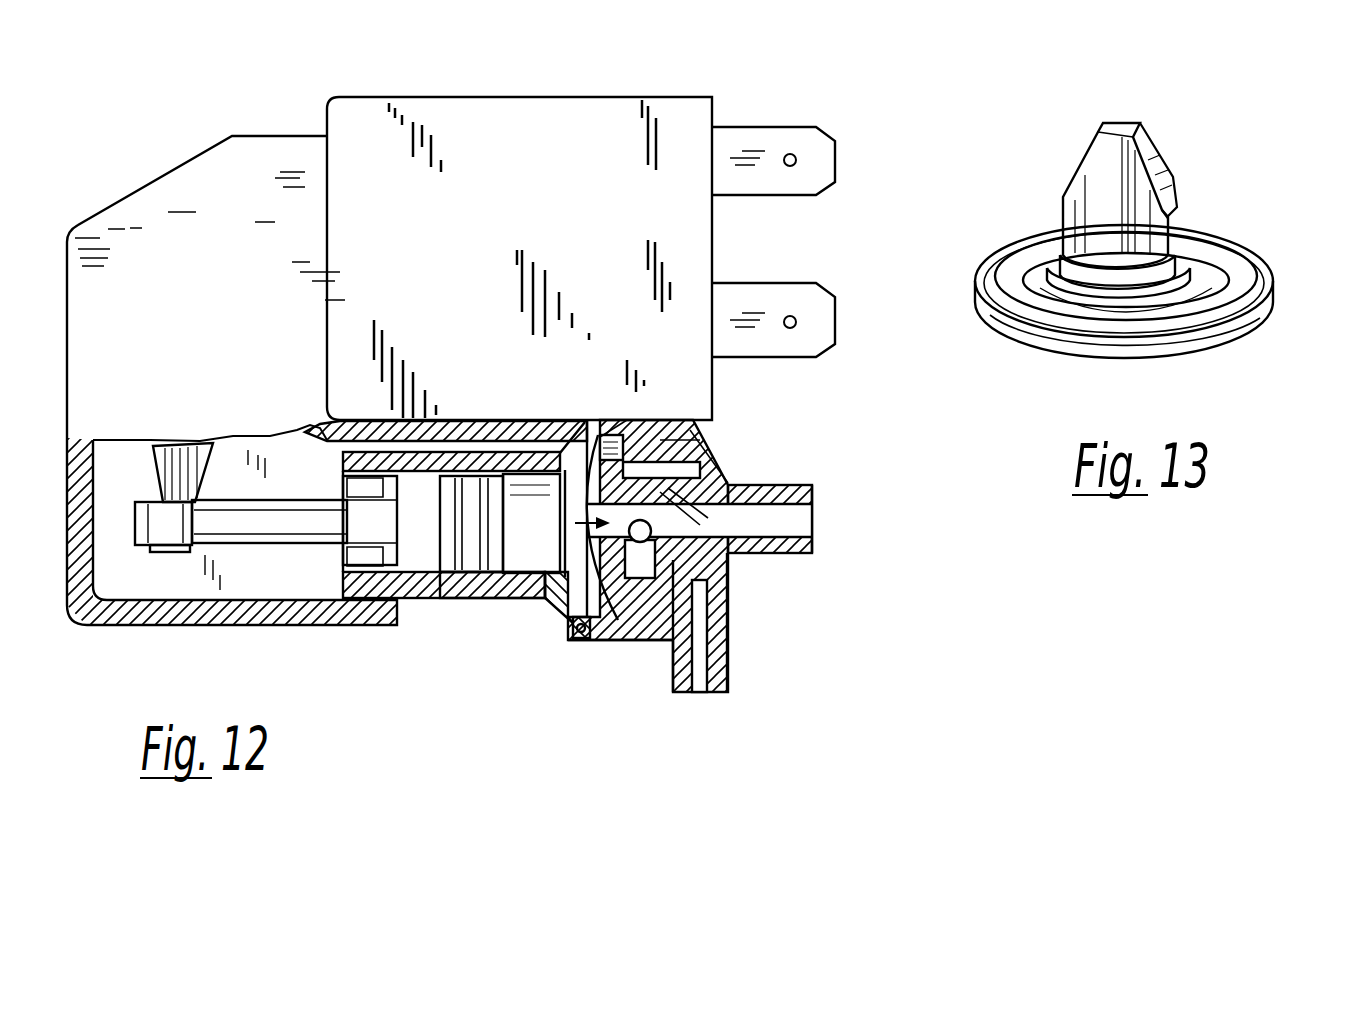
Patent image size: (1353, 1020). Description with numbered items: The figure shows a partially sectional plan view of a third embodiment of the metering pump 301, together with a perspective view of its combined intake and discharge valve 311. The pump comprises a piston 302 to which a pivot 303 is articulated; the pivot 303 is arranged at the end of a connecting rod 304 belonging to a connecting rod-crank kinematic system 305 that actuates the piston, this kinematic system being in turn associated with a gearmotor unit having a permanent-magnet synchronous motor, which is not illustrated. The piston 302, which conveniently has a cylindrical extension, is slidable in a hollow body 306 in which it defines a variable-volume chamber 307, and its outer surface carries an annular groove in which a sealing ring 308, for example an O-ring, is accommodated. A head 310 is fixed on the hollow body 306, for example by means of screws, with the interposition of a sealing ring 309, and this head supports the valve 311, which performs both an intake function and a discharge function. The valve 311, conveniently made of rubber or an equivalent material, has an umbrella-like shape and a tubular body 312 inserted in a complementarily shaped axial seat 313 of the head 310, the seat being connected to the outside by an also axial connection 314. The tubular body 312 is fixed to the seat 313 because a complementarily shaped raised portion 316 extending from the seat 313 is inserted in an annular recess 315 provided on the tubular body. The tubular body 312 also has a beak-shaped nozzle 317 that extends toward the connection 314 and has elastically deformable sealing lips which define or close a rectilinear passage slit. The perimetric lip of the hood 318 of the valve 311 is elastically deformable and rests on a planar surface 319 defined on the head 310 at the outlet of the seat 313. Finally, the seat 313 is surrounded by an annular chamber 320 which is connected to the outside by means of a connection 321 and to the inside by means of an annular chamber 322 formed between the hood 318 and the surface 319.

In FIG. 12, the metering pump 301 is at (650, 68).
In FIG. 12, the piston 302 is at (428, 583).
In FIG. 12, the pivot 303 is at (368, 560).
In FIG. 12, the connecting rod 304 is at (303, 528).
In FIG. 12, the connecting rod-crank kinematic system 305 is at (163, 568).
In FIG. 12, the hollow body 306 is at (483, 585).
In FIG. 12, the variable-volume chamber 307 is at (533, 543).
In FIG. 12, the sealing ring 308 is at (462, 570).
In FIG. 12, the sealing ring 309 is at (568, 642).
In FIG. 12, the head 310 is at (628, 590).
In FIG. 12, the valve 311 is at (728, 482).
In FIG. 13, the valve 311 is at (1198, 140).
In FIG. 12, the tubular body 312 is at (648, 545).
In FIG. 13, the tubular body 312 is at (1089, 229).
In FIG. 12, the axial seat 313 is at (705, 548).
In FIG. 12, the connection 314 is at (790, 530).
In FIG. 12, the annular recess 315 is at (690, 455).
In FIG. 13, the annular recess 315 is at (1009, 265).
In FIG. 12, the raised portion 316 is at (628, 600).
In FIG. 12, the beak-shaped nozzle 317 is at (740, 553).
In FIG. 13, the beak-shaped nozzle 317 is at (1098, 156).
In FIG. 12, the hood 318 is at (597, 457).
In FIG. 13, the hood 318 is at (1069, 359).
In FIG. 12, the planar surface 319 is at (622, 462).
In FIG. 13, the planar surface 319 is at (1258, 295).
In FIG. 12, the annular chamber 320 is at (715, 475).
In FIG. 12, the connection 321 is at (725, 668).
In FIG. 12, the annular chamber 322 is at (598, 640).
In FIG. 13, the annular chamber 322 is at (1223, 260).